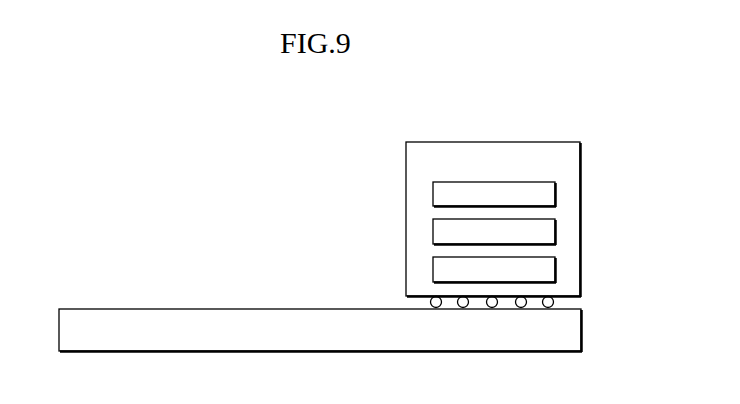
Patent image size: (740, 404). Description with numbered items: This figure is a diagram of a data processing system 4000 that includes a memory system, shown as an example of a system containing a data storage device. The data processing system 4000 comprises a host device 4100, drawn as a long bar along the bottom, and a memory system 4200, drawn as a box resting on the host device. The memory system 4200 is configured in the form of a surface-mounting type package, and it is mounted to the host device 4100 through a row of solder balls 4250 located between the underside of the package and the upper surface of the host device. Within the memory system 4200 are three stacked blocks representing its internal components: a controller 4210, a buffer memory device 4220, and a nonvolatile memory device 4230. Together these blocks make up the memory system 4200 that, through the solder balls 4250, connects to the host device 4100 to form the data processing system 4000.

The data processing system 4000 is at (127, 118).
The host device 4100 is at (320, 330).
The memory system 4200 is at (493, 219).
The controller 4210 is at (494, 194).
The buffer memory device 4220 is at (494, 232).
The nonvolatile memory device 4230 is at (494, 270).
The solder balls 4250 is at (565, 302).